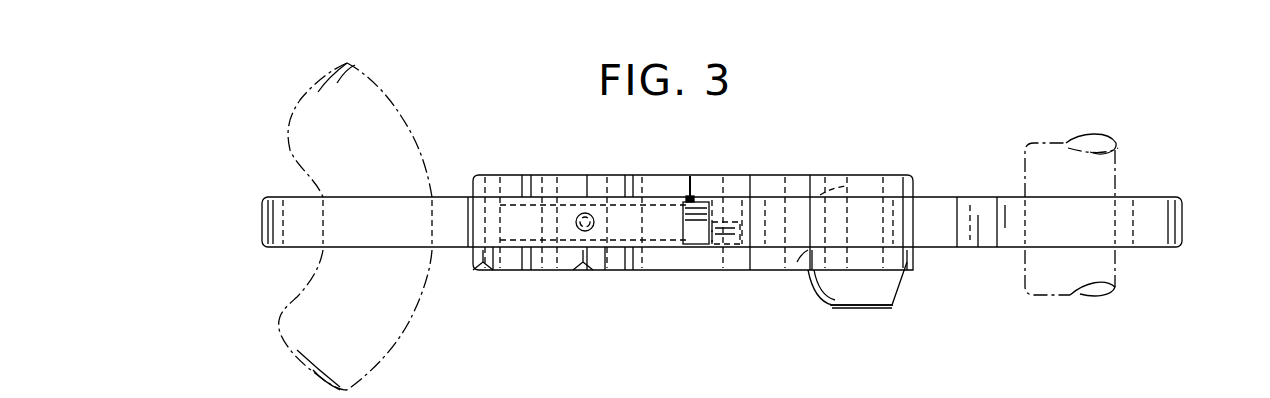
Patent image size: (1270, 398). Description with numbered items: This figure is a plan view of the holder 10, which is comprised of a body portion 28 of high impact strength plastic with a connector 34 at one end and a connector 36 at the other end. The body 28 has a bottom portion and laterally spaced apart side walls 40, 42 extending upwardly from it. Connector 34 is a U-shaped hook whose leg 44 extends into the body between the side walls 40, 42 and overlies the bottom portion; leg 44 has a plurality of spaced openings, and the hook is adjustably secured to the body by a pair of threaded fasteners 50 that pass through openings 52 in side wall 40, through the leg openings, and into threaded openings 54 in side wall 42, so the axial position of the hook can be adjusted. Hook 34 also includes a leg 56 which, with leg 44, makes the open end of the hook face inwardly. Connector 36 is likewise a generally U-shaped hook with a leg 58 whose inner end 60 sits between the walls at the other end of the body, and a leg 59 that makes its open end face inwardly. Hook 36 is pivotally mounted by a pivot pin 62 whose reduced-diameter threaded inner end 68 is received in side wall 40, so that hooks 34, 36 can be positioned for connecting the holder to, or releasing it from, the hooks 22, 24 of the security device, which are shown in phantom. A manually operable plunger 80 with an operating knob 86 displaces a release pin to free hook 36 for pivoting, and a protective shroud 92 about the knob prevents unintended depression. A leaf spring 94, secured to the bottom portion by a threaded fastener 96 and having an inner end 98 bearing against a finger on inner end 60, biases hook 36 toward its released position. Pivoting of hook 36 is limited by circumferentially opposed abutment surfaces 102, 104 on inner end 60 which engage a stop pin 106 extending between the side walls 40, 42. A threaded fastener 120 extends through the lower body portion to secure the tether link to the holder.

The holder 10 is at (952, 287).
The hook 22 is at (1108, 160).
The hook 24 is at (287, 133).
The body portion 28 is at (787, 181).
The connector 34 is at (292, 247).
The connector 36 is at (1158, 199).
The side wall 40 is at (747, 262).
The side wall 42 is at (728, 185).
The leg 44 is at (525, 205).
The threaded fasteners 50 is at (494, 272).
The openings 52 is at (462, 265).
The threaded openings 54 is at (515, 175).
The leg 56 is at (410, 210).
The leg 58 is at (957, 205).
The leg 59 is at (1012, 208).
The inner end 60 is at (903, 190).
The pivot pin 62 is at (868, 182).
The threaded inner end 68 is at (797, 264).
The plunger 80 is at (884, 310).
The operating knob 86 is at (857, 310).
The protective shroud 92 is at (897, 284).
The leaf spring 94 is at (691, 176).
The threaded fastener 96 is at (585, 250).
The inner end 98 is at (716, 262).
The abutment surface 102 is at (813, 272).
The abutment surface 104 is at (743, 200).
The stop pin 106 is at (838, 188).
The threaded fastener 120 is at (690, 262).